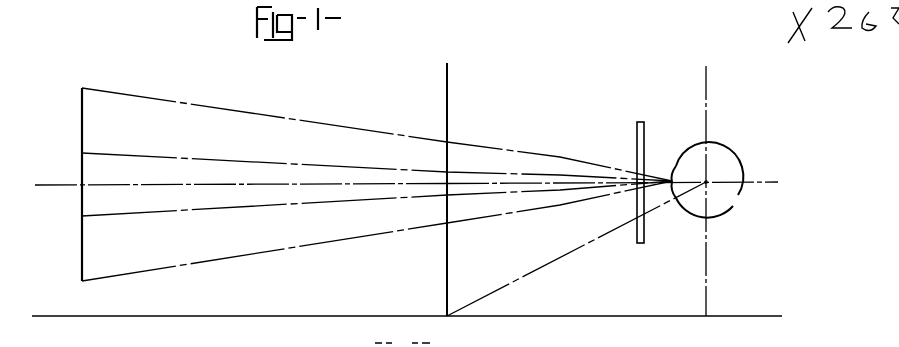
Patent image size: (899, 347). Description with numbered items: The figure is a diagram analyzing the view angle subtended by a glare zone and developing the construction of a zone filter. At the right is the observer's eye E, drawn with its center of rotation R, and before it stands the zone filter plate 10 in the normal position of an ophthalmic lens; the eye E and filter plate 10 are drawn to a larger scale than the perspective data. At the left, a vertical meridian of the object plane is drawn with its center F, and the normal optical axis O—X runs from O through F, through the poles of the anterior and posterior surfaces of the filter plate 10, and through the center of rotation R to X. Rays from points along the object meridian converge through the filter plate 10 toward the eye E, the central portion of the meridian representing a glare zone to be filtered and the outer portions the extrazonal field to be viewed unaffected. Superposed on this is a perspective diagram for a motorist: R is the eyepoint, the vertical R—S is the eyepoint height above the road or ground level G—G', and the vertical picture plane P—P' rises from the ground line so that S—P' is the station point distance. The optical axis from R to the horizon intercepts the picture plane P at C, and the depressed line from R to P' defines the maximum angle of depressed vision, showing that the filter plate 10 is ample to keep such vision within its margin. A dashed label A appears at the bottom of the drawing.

The zone filter plate 10 is at (648, 112).
The center of the object plane meridian F is at (366, 189).
The picture plane P is at (447, 316).
The intercept of the optical axis on the picture plane C is at (447, 180).
The observer's eye E is at (739, 197).
The center of rotation of the eye R is at (706, 182).
The station point S is at (704, 201).
The ground level G is at (410, 317).
The origin of the optical axis O is at (231, 184).
The optical axis end point X is at (621, 183).
The base reference A is at (402, 340).